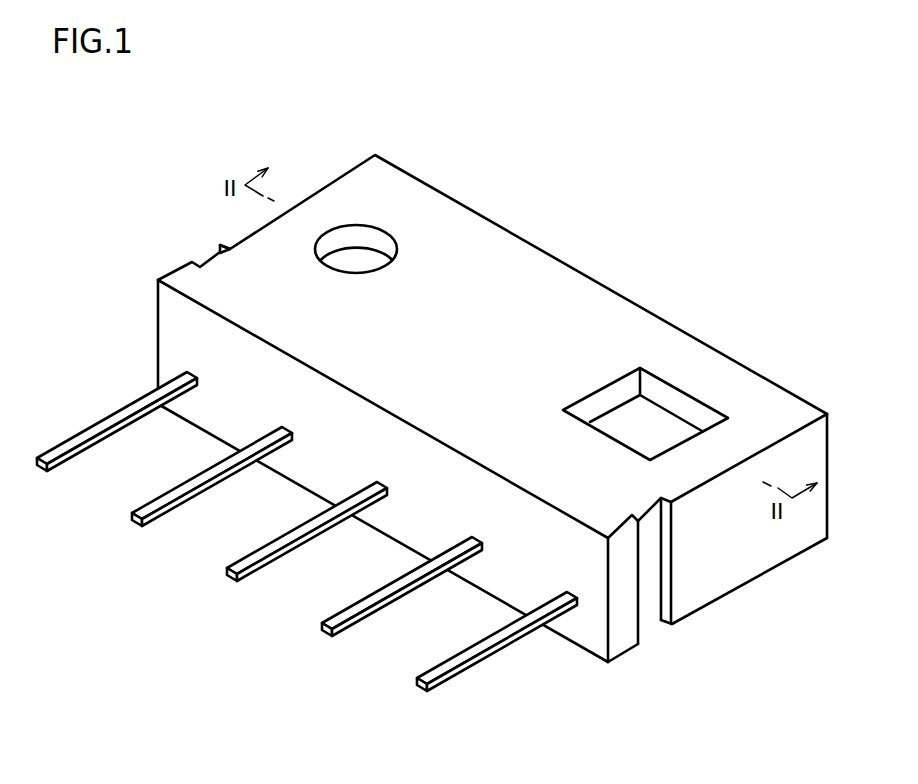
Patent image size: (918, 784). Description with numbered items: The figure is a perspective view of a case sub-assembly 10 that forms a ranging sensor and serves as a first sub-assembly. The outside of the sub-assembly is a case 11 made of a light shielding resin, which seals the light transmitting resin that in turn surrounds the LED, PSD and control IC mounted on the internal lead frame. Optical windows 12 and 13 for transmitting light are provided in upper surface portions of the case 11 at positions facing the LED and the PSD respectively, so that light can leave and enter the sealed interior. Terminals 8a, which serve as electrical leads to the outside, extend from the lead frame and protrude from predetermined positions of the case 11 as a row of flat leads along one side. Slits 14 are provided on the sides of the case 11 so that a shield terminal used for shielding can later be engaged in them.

The terminals 8a is at (24, 472).
The case sub-assembly 10 is at (425, 411).
The case 11 is at (508, 278).
The optical window 12 is at (350, 242).
The optical window 13 is at (675, 402).
The slits 14 is at (212, 259).